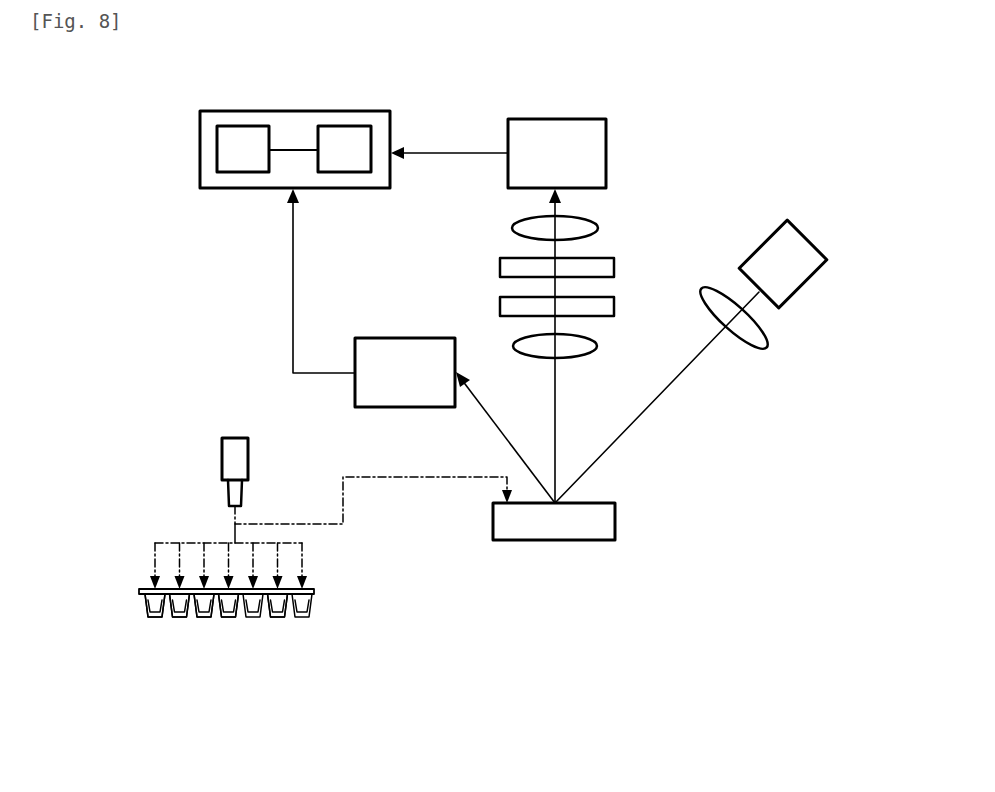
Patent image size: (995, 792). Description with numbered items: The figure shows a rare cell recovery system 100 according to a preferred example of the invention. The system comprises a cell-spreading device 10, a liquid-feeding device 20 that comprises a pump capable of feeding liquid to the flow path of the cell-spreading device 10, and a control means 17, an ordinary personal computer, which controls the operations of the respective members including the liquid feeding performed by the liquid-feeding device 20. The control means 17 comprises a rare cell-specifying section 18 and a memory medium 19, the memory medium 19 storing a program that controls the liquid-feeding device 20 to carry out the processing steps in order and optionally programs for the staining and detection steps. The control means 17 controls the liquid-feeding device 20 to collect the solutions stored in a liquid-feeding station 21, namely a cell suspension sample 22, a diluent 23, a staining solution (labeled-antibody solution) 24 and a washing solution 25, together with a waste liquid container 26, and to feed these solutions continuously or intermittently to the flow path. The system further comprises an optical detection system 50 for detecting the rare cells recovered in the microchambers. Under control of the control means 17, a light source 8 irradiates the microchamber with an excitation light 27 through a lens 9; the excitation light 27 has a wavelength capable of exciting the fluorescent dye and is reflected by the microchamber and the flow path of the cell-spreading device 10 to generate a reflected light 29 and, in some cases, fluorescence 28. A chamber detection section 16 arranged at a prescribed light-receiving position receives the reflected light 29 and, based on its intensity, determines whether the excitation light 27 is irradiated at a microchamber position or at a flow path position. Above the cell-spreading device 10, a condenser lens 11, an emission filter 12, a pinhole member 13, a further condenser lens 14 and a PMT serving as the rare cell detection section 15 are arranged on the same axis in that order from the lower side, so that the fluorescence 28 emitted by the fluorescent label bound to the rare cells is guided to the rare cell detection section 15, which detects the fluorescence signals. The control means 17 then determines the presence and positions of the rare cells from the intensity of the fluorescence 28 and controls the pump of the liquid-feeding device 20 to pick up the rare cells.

The rare cell recovery system 100 is at (686, 216).
The optical detection system 50 is at (267, 302).
The liquid-feeding station 21 is at (174, 484).
The control means 17 is at (206, 182).
The rare cell-specifying section 18 is at (219, 142).
The memory medium 19 is at (348, 135).
The rare cell detection section 15 is at (600, 132).
The condenser lens 14 is at (595, 226).
The pinhole member 13 is at (500, 266).
The emission filter 12 is at (612, 303).
The condenser lens 11 is at (595, 345).
The fluorescence 28 is at (557, 377).
The chamber detection section 16 is at (362, 395).
The reflected light 29 is at (487, 412).
The light source 8 is at (813, 278).
The lens 9 is at (765, 343).
The excitation light 27 is at (683, 385).
The cell-spreading device 10 is at (610, 525).
The liquid-feeding device 20 is at (222, 447).
The cell suspension sample 22 is at (155, 614).
The diluent 23 is at (180, 614).
The staining solution (labeled-antibody solution) 24 is at (204, 614).
The washing solution 25 is at (232, 614).
The waste liquid container 26 is at (280, 614).